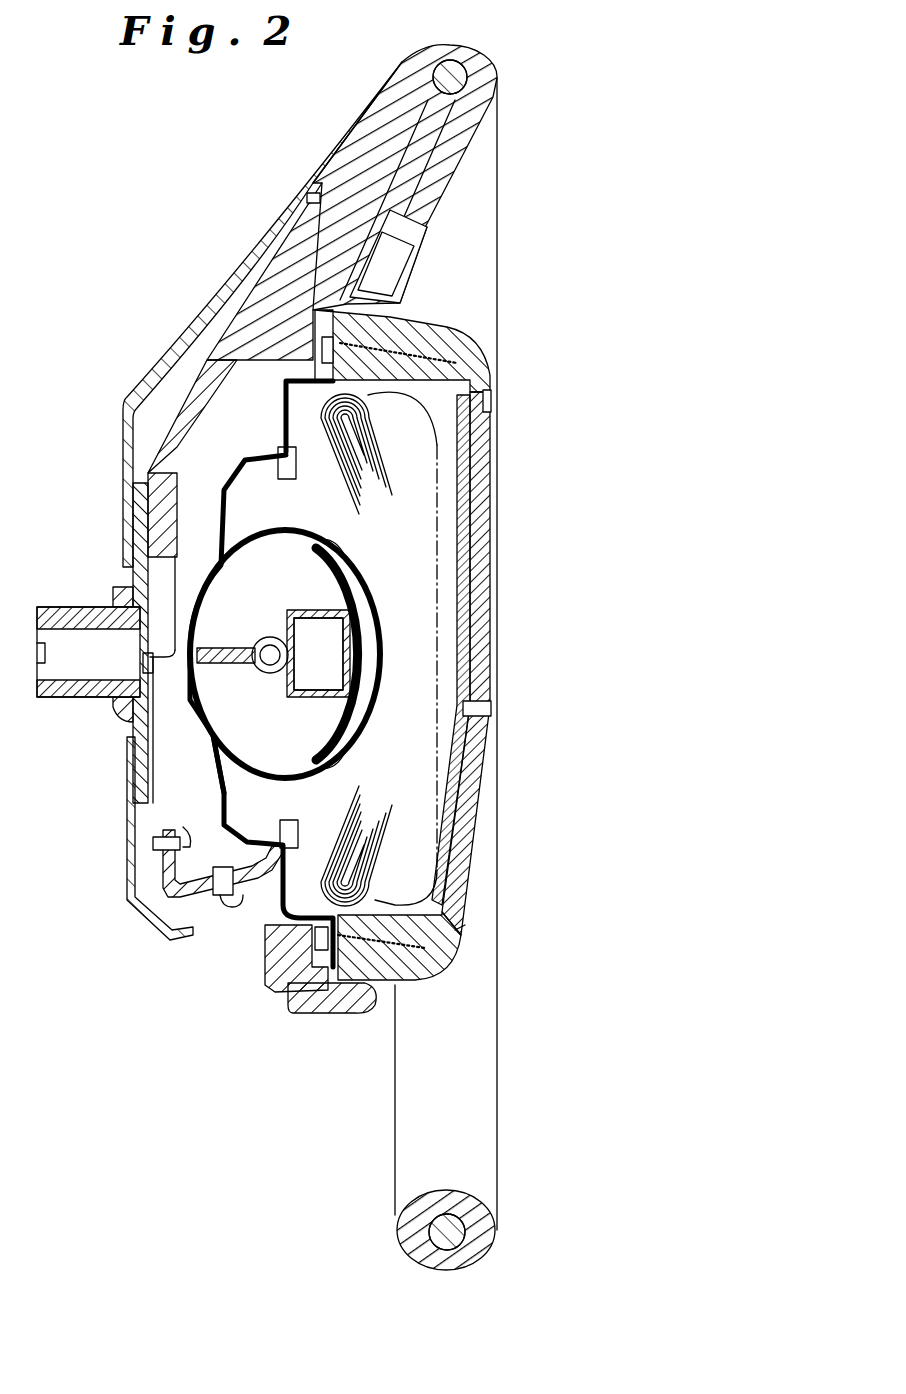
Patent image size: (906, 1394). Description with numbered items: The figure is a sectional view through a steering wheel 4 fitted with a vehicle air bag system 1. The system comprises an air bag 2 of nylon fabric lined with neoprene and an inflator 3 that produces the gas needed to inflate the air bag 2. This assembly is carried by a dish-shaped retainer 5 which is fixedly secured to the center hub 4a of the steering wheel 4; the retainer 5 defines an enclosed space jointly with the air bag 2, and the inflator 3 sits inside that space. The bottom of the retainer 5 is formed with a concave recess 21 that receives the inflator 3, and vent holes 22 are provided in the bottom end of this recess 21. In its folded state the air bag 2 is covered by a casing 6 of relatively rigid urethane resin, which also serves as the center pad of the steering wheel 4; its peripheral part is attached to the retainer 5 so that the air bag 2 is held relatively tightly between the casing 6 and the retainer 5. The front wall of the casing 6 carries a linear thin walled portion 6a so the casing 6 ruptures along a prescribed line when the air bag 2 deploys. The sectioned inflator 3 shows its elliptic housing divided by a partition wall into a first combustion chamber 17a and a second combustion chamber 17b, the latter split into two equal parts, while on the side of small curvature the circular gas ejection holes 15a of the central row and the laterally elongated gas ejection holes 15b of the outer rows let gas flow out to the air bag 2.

The air bag system 1 is at (447, 533).
The air bag 2 is at (435, 477).
The inflator 3 is at (390, 617).
The steering wheel 4 is at (492, 748).
The center hub 4a is at (137, 827).
The retainer 5 is at (217, 520).
The casing 6 is at (483, 825).
The linear thin walled portion 6a is at (487, 403).
The gas ejection holes of the central row 15a is at (353, 657).
The gas ejection holes of the outer rows 15b is at (343, 583).
The first combustion chamber 17a is at (340, 676).
The second combustion chamber 17b is at (273, 609).
The concave recess 21 is at (213, 735).
The vent holes 22 is at (157, 702).